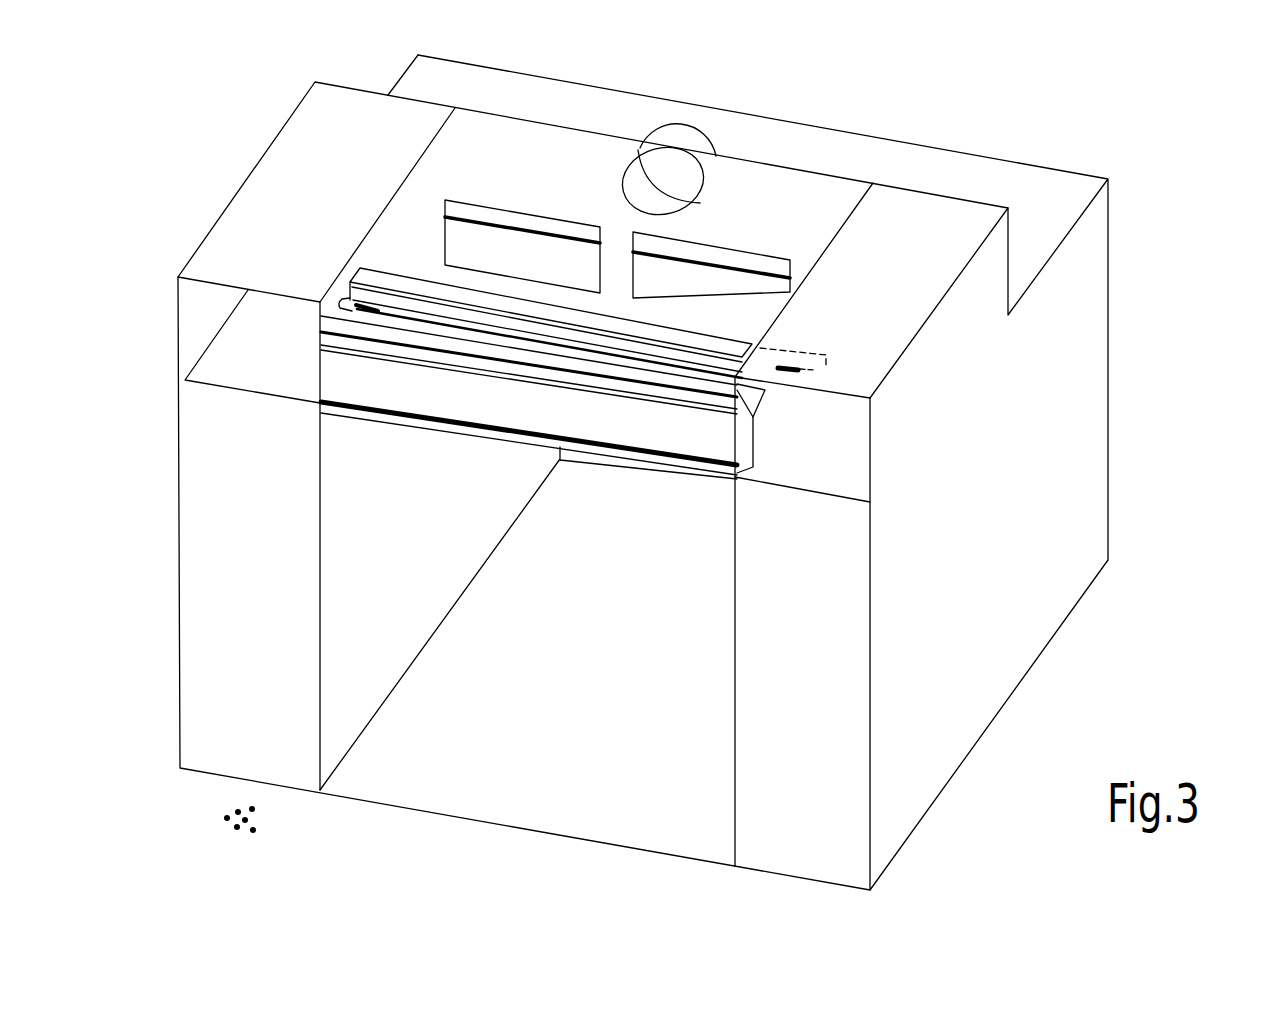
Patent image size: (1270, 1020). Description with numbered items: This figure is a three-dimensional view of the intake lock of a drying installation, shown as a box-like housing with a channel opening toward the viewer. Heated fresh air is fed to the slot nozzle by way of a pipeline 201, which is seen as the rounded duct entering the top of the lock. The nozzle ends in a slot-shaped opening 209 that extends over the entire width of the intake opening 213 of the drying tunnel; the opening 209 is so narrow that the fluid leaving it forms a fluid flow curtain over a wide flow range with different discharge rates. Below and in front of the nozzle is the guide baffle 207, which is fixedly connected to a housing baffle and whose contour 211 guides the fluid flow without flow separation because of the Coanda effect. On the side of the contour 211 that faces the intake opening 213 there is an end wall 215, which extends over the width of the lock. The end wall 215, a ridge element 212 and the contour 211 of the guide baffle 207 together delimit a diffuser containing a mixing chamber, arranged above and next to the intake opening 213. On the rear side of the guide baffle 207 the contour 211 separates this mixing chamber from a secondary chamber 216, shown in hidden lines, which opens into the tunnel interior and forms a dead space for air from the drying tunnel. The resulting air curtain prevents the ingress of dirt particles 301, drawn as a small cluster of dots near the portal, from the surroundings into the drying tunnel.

The pipeline 201 is at (685, 132).
The guide baffle 207 is at (415, 286).
The slot-shaped opening 209 is at (350, 306).
The contour 211 is at (1142, 188).
The ridge element 212 is at (752, 399).
The intake opening 213 is at (445, 783).
The end wall 215 is at (637, 432).
The secondary chamber 216 is at (828, 362).
The dirt particles 301 is at (225, 818).